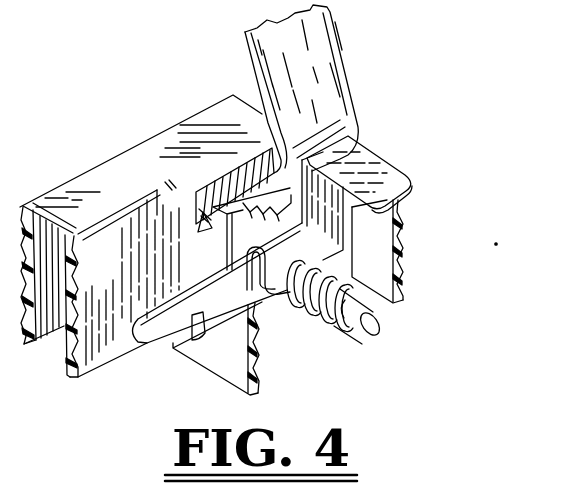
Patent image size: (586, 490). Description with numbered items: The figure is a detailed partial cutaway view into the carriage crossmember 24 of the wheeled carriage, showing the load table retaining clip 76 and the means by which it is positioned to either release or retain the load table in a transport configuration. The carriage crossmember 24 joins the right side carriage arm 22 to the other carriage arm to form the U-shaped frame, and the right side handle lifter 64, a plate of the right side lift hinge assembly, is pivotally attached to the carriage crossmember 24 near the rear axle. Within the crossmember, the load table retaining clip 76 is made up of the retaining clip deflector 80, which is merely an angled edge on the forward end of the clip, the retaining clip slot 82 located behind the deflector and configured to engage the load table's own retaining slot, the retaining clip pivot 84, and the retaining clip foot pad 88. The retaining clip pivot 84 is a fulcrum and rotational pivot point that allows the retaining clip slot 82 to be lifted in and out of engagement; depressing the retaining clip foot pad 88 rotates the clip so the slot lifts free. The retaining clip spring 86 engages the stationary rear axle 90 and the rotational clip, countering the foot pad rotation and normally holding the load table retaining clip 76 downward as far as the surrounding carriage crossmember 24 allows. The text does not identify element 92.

The right side carriage arm 22 is at (113, 190).
The carriage crossmember 24 is at (402, 264).
The right side handle lifter 64 is at (327, 72).
The load table retaining clip 76 is at (386, 152).
The retaining clip deflector 80 is at (153, 337).
The retaining clip slot 82 is at (203, 333).
The retaining clip pivot 84 is at (278, 256).
The retaining clip spring 86 is at (331, 323).
The retaining clip foot pad 88 is at (397, 180).
The stationary rear axle 90 is at (380, 325).
The toothed ledge 92 is at (203, 232).